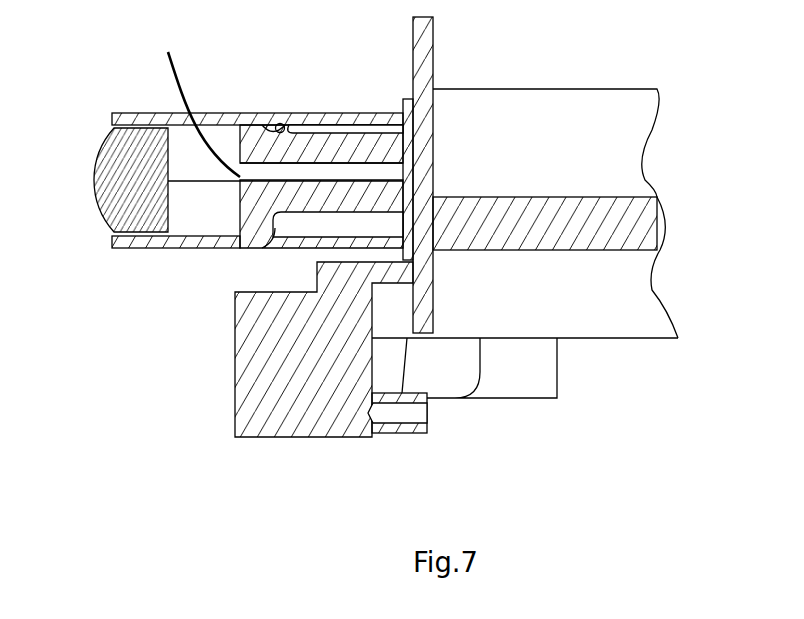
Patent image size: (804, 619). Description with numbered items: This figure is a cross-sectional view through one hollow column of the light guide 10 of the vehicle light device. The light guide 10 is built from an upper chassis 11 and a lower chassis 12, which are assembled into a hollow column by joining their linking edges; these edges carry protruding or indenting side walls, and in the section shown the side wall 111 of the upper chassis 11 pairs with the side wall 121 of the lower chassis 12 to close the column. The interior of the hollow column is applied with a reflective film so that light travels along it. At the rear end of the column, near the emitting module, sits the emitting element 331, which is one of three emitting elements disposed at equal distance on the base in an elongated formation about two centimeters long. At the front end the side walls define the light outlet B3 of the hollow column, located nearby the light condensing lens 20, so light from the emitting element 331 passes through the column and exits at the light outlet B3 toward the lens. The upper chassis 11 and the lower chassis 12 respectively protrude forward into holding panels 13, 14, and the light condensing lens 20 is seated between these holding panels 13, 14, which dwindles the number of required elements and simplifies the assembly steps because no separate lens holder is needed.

The light guide 10 is at (282, 123).
The upper chassis 11 is at (227, 117).
The lower chassis 12 is at (258, 238).
The holding panel 13 is at (138, 113).
The holding panel 14 is at (170, 242).
The light condensing lens 20 is at (112, 153).
The side wall 111 is at (330, 162).
The side wall 121 is at (257, 180).
The emitting element 331 is at (401, 166).
The light outlet B3 is at (198, 101).